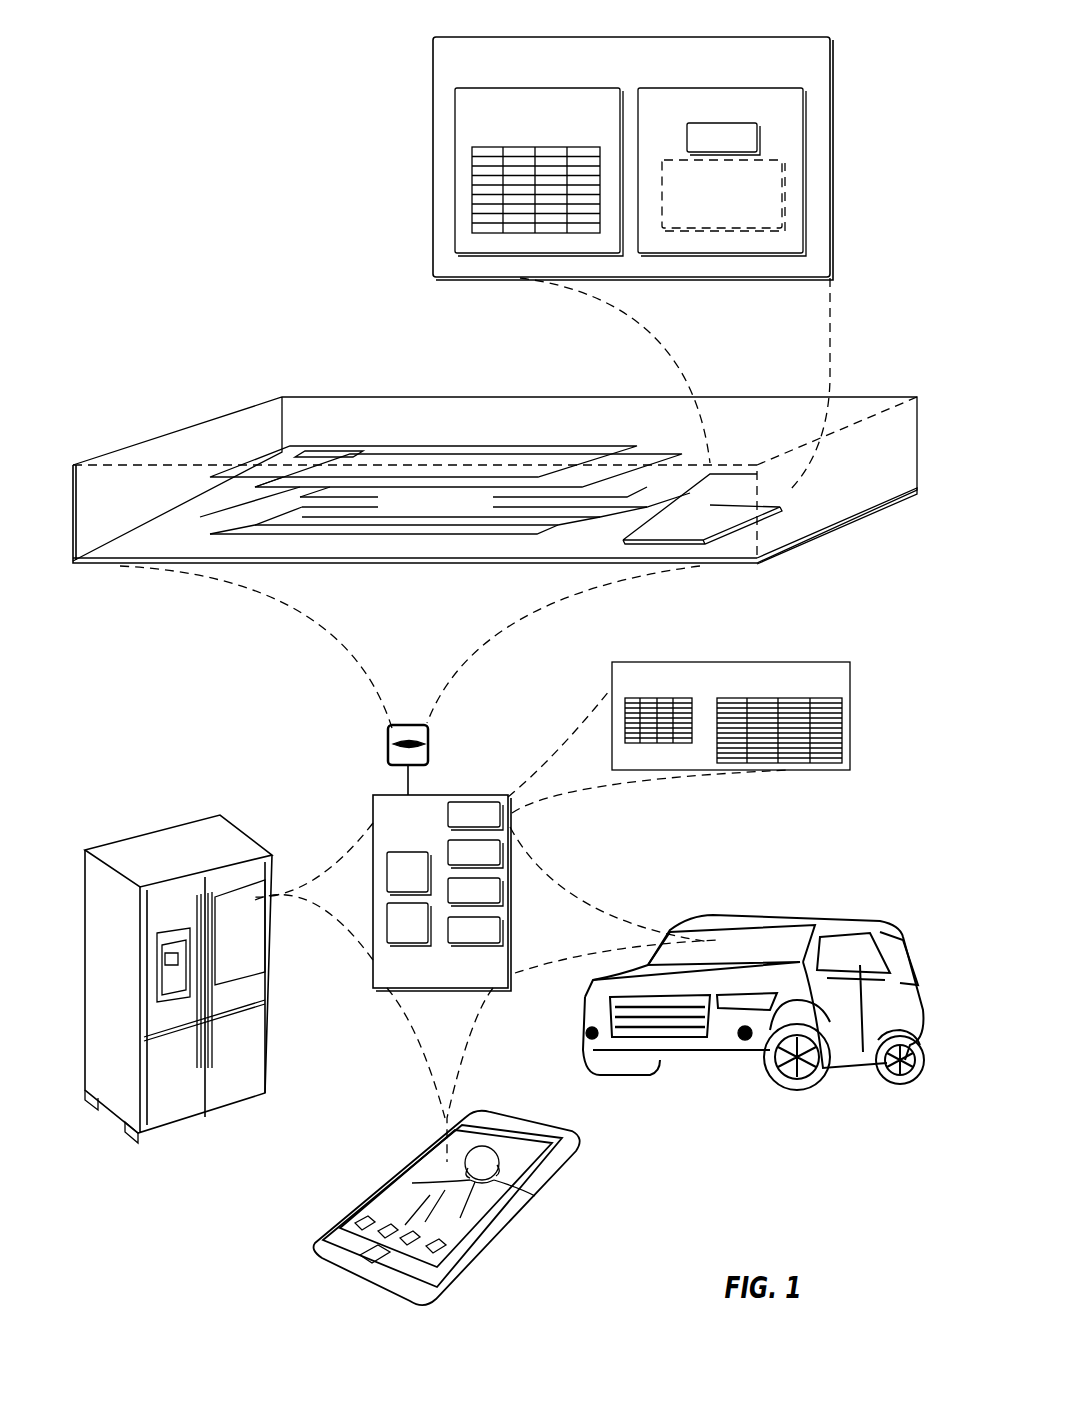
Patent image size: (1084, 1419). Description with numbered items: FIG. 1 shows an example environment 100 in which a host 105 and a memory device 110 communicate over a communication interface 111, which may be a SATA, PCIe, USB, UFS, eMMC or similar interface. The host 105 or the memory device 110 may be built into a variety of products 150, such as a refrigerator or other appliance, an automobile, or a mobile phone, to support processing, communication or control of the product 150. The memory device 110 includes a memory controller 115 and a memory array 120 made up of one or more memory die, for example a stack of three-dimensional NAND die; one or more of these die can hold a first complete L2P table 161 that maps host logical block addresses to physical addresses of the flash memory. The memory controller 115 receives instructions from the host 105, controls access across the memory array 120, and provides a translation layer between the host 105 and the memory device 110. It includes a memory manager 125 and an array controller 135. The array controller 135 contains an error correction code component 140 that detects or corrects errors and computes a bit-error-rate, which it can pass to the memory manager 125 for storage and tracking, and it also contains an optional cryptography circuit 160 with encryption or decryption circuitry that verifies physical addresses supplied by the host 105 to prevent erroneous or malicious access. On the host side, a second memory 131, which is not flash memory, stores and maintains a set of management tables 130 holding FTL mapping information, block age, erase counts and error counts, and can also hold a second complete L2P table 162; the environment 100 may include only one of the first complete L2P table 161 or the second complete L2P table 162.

The environment 100 is at (802, 36).
The host 105 is at (372, 805).
The memory device 110 is at (223, 418).
The communication interface 111 is at (408, 783).
The memory controller 115 is at (433, 42).
The memory array 120 is at (493, 443).
The memory manager 125 is at (455, 124).
The management tables 130 is at (472, 185).
The second memory 131 is at (690, 662).
The array controller 135 is at (803, 197).
The error correction code (ECC) component 140 is at (732, 78).
The product 150 is at (173, 827).
The cryptography circuit 160 is at (777, 207).
The first complete L2P table 161 is at (324, 452).
The second complete L2P table 162 is at (815, 770).